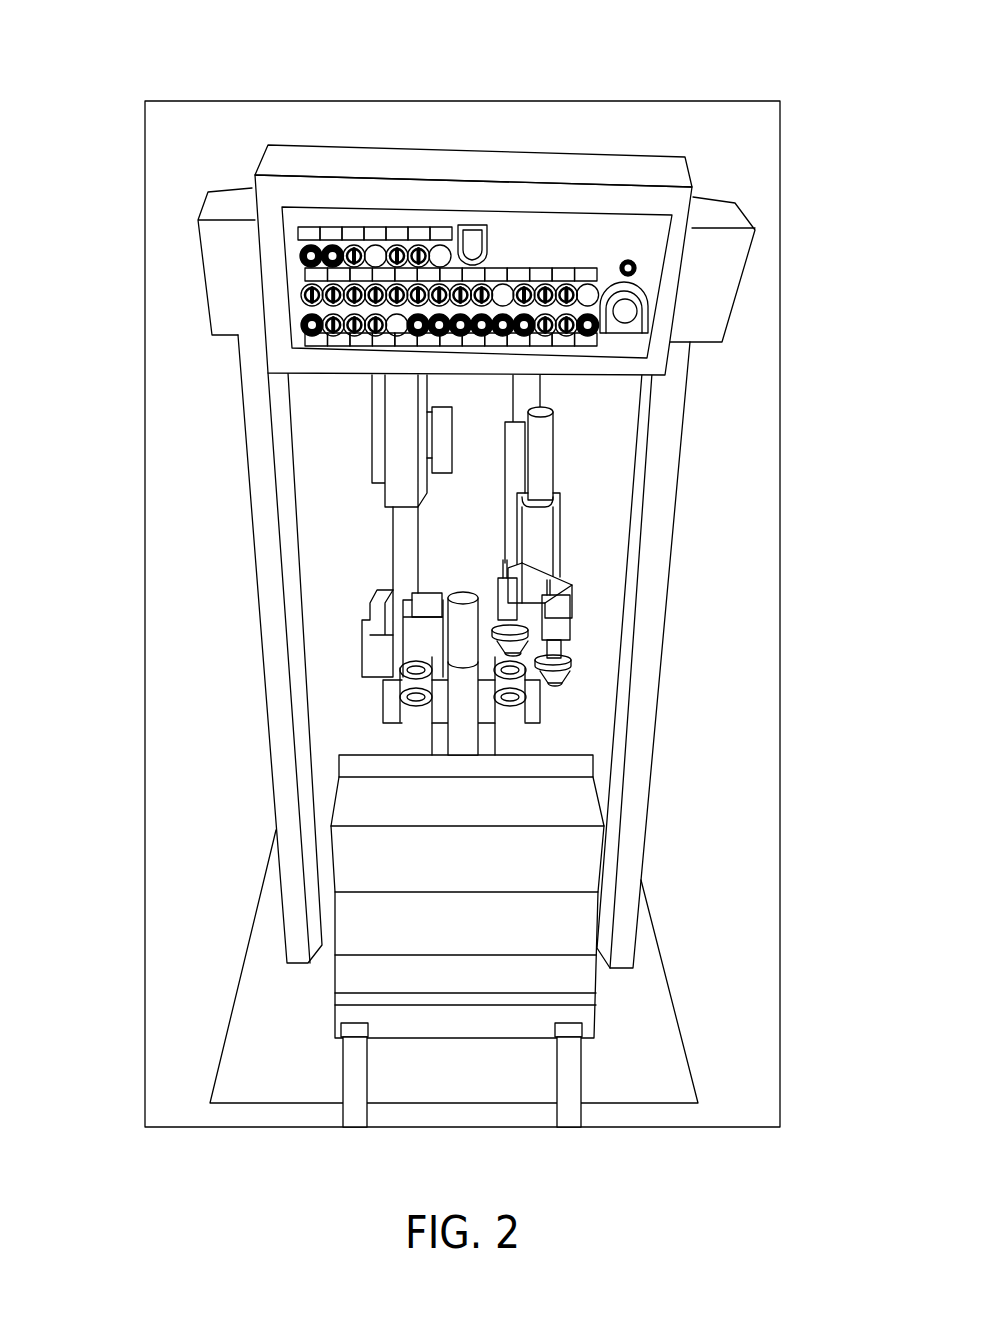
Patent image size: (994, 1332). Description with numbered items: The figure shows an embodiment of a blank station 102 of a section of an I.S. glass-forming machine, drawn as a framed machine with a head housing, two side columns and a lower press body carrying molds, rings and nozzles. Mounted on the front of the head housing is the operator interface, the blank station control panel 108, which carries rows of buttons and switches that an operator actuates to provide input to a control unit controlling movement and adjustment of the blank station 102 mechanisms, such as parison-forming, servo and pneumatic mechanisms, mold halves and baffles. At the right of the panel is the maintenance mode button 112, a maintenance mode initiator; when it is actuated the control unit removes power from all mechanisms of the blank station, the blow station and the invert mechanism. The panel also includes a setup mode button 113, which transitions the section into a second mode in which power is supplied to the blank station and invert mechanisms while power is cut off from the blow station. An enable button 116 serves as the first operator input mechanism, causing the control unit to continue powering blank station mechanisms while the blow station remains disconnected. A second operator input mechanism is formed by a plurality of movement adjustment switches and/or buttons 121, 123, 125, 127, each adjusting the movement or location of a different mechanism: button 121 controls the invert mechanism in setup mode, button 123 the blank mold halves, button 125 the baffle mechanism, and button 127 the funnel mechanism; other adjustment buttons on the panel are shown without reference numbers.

The blank station 102 is at (228, 193).
The blank station control panel 108 is at (578, 232).
The maintenance mode button 112 is at (630, 312).
The setup mode button 113 is at (353, 258).
The movement adjustment switch and/or button 121 is at (400, 262).
The movement adjustment switch and/or button 123 is at (300, 293).
The movement adjustment switch and/or button 125 is at (302, 307).
The enable button 116 is at (305, 327).
The movement adjustment switch and/or button 127 is at (391, 316).